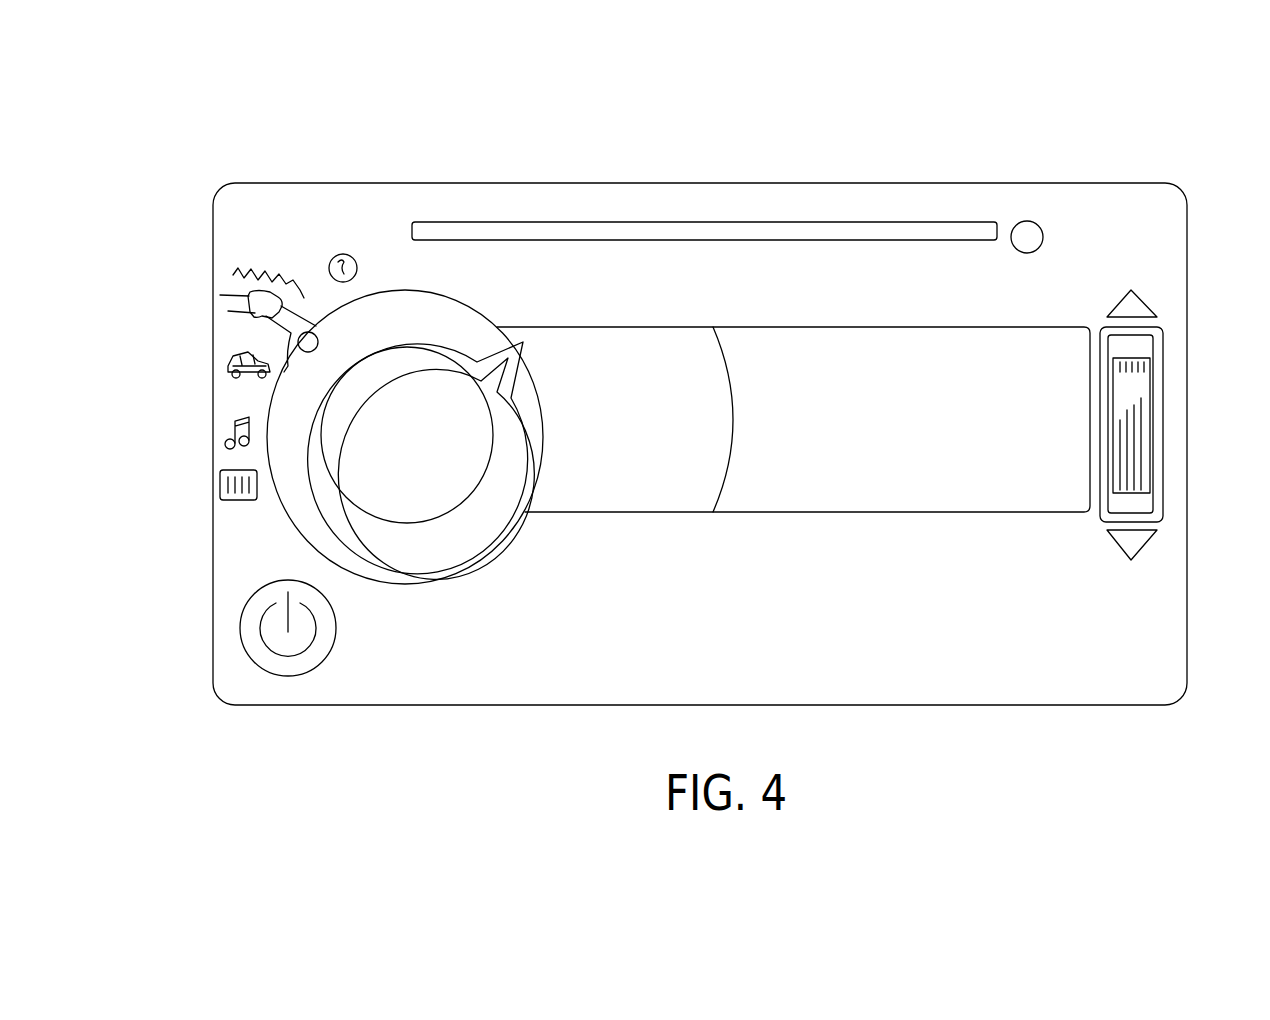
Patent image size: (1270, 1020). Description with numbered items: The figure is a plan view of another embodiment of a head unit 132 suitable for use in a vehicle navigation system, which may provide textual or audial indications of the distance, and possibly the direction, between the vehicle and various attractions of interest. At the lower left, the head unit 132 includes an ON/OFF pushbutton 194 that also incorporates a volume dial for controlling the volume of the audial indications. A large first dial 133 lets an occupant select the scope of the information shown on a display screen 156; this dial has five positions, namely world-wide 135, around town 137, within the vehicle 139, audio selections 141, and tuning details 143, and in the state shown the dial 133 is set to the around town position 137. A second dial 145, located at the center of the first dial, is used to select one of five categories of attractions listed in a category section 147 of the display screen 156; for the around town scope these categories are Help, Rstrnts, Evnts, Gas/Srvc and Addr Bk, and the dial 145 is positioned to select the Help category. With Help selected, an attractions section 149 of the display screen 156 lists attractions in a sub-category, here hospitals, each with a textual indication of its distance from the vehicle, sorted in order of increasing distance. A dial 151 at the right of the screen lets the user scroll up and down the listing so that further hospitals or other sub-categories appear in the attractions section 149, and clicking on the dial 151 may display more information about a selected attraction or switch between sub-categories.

The head unit 132 is at (1008, 110).
The first dial 133 is at (452, 563).
The world-wide position 135 is at (340, 253).
The around town position 137 is at (230, 300).
The within the vehicle position 139 is at (228, 350).
The audio selections position 141 is at (232, 425).
The tuning details position 143 is at (222, 483).
The second dial 145 is at (425, 453).
The category section 147 is at (657, 337).
The attractions section 149 is at (1047, 333).
The dial 151 is at (1132, 393).
The display screen 156 is at (696, 337).
The ON/OFF pushbutton 194 is at (323, 640).